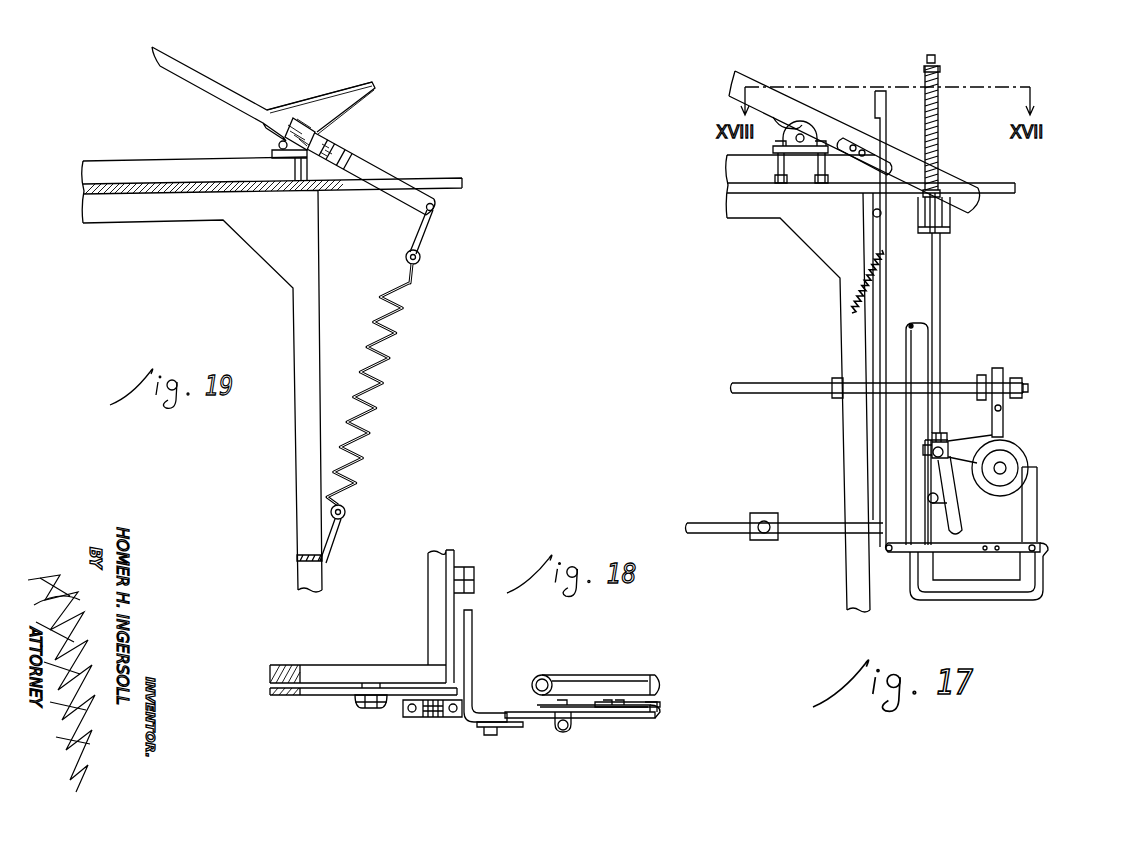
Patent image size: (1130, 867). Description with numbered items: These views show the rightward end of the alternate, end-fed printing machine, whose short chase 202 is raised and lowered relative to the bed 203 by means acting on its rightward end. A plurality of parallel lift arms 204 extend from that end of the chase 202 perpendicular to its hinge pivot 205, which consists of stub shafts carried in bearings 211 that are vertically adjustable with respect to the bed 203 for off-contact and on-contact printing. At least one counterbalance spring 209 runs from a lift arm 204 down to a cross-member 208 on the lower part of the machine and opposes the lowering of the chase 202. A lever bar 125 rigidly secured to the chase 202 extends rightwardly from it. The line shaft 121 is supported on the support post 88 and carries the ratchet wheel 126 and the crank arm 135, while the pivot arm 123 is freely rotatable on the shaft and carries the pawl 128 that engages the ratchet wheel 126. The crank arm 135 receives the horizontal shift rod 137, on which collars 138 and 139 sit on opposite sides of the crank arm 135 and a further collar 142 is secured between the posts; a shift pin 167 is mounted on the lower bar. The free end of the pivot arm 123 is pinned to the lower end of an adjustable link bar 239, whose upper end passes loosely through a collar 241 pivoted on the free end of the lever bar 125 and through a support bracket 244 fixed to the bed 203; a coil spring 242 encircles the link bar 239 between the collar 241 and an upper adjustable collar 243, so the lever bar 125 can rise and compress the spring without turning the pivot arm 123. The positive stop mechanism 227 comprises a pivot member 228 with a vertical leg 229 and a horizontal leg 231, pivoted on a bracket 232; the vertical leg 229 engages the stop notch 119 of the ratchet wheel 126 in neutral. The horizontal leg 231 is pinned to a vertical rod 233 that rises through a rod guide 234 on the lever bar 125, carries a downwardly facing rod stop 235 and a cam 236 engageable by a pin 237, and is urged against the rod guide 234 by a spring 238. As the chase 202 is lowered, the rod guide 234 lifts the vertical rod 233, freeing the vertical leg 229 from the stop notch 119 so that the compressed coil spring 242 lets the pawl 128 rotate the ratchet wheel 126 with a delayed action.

In FIG. 18, the support post 88 is at (538, 680).
In FIG. 17, the support post 88 is at (921, 341).
In FIG. 17, the stop notch 119 is at (1033, 468).
In FIG. 17, the line shaft 121 is at (998, 486).
In FIG. 17, the pivot arm 123 is at (981, 478).
In FIG. 18, the lever bar 125 is at (494, 713).
In FIG. 17, the lever bar 125 is at (900, 171).
In FIG. 17, the ratchet wheel 126 is at (1015, 446).
In FIG. 17, the pawl 128 is at (966, 440).
In FIG. 17, the crank arm 135 is at (1004, 416).
In FIG. 17, the shift rod 137 is at (786, 393).
In FIG. 17, the collar 138 is at (983, 375).
In FIG. 17, the collar 139 is at (1021, 378).
In FIG. 17, the collar 142 is at (839, 398).
In FIG. 17, the shift pin 167 is at (763, 537).
In FIG. 19, the chase 202 is at (216, 86).
In FIG. 18, the chase 202 is at (326, 692).
In FIG. 17, the chase 202 is at (742, 86).
In FIG. 19, the bed 203 is at (128, 158).
In FIG. 17, the bed 203 is at (735, 181).
In FIG. 19, the lift arm 204 is at (374, 172).
In FIG. 19, the hinge pivot 205 is at (278, 143).
In FIG. 17, the hinge pivot 205 is at (800, 130).
In FIG. 19, the cross-member 208 is at (298, 557).
In FIG. 19, the counterbalance spring 209 is at (388, 358).
In FIG. 18, the bearing 211 is at (435, 718).
In FIG. 17, the bearing 211 is at (806, 134).
In FIG. 17, the stop mechanism 227 is at (1040, 599).
In FIG. 18, the pivot member 228 is at (648, 742).
In FIG. 17, the pivot member 228 is at (1045, 531).
In FIG. 18, the vertical leg 229 is at (588, 729).
In FIG. 17, the vertical leg 229 is at (1031, 497).
In FIG. 18, the horizontal leg 231 is at (588, 714).
In FIG. 17, the horizontal leg 231 is at (945, 545).
In FIG. 18, the bracket 232 is at (612, 682).
In FIG. 17, the bracket 232 is at (962, 592).
In FIG. 18, the vertical rod 233 is at (518, 728).
In FIG. 17, the vertical rod 233 is at (887, 362).
In FIG. 18, the rod guide 234 is at (487, 730).
In FIG. 17, the rod guide 234 is at (876, 168).
In FIG. 17, the rod stop 235 is at (885, 92).
In FIG. 17, the cam 236 is at (886, 229).
In FIG. 17, the pin 237 is at (872, 216).
In FIG. 17, the spring 238 is at (852, 306).
In FIG. 18, the link bar 239 is at (566, 720).
In FIG. 17, the link bar 239 is at (939, 301).
In FIG. 18, the collar 241 is at (561, 731).
In FIG. 17, the collar 241 is at (946, 195).
In FIG. 17, the coil spring 242 is at (942, 88).
In FIG. 17, the collar 243 is at (934, 61).
In FIG. 17, the support bracket 244 is at (951, 219).